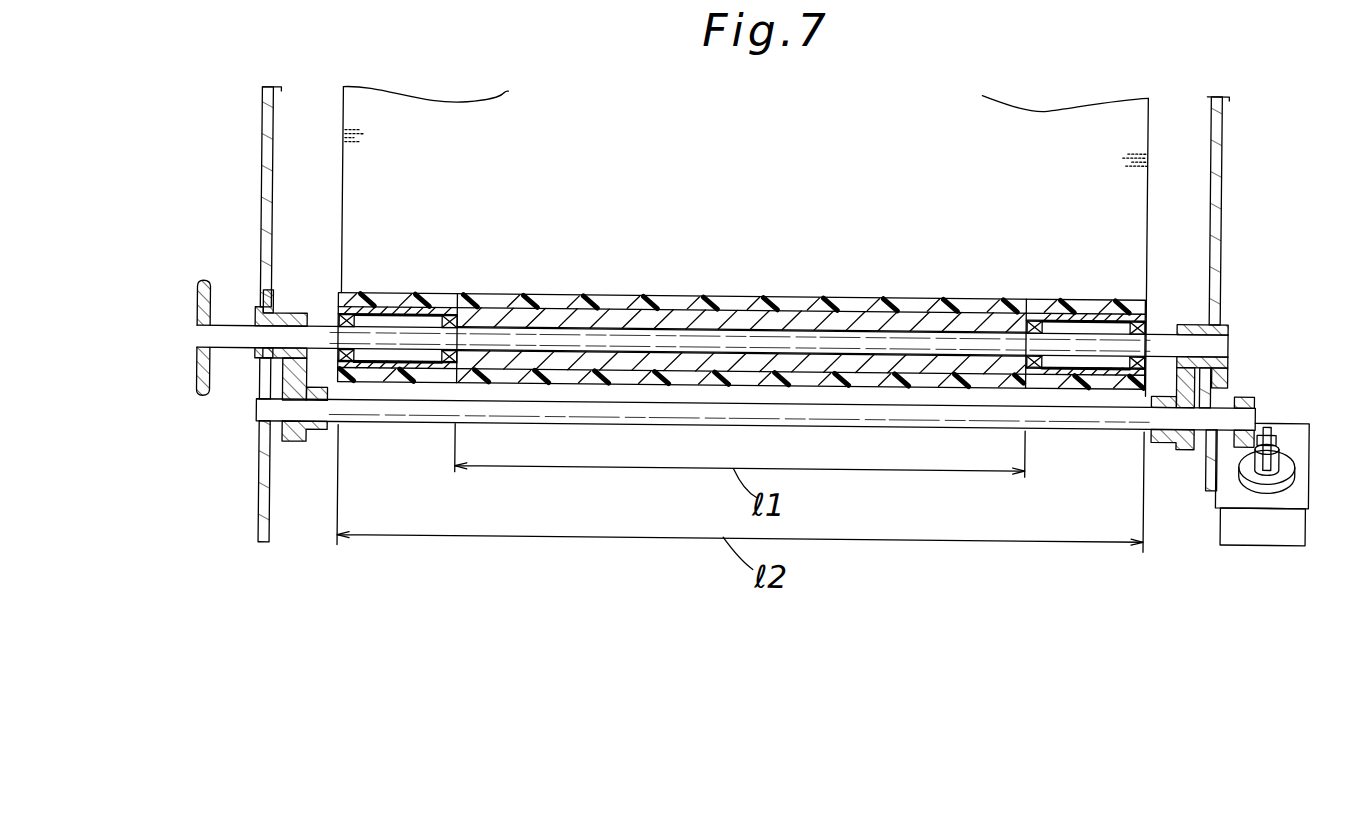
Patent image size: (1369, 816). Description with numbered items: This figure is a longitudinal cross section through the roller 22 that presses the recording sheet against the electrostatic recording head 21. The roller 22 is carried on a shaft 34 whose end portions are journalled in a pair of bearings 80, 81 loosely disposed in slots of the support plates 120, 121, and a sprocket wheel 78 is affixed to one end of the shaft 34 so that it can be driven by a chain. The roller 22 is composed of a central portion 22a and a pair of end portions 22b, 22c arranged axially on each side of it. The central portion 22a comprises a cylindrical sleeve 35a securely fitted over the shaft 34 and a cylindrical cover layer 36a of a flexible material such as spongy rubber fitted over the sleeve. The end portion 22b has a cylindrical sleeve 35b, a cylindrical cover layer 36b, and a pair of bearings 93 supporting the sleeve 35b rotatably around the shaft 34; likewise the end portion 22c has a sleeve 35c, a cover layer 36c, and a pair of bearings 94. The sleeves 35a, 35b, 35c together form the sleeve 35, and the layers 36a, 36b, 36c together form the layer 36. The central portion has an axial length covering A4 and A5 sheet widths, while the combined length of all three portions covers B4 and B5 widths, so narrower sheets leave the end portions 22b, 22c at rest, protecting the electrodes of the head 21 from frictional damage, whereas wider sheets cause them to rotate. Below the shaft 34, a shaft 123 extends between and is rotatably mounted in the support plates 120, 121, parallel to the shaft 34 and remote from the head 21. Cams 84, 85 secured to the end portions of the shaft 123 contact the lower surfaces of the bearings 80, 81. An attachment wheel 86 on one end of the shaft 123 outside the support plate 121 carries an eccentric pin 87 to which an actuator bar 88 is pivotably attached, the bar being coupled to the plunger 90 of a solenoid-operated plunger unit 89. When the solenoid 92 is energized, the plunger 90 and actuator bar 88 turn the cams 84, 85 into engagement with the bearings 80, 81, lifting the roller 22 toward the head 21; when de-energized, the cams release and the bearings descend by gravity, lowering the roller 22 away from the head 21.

The electrostatic recording head 21 is at (1133, 144).
The roller 22 is at (742, 291).
The central portion 22a is at (742, 292).
The end portion 22b is at (431, 290).
The end portion 22c is at (1047, 293).
The shaft 34 is at (322, 331).
The sleeve 35 is at (637, 318).
The cylindrical sleeve 35a is at (752, 316).
The cylindrical sleeve 35b is at (380, 314).
The cylindrical sleeve 35c is at (1050, 314).
The cover layer 36 is at (708, 303).
The cylindrical cover layer 36a is at (738, 246).
The cylindrical cover layer 36b is at (413, 304).
The cylindrical cover layer 36c is at (1094, 318).
The sprocket wheel 78 is at (208, 306).
The bearing 80 is at (258, 356).
The bearing 81 is at (1230, 360).
The cam 84 is at (298, 367).
The cam 85 is at (1187, 373).
The attachment wheel 86 is at (1247, 438).
The eccentric pin 87 is at (1277, 428).
The actuator bar 88 is at (1270, 435).
The solenoid-operated plunger unit 89 is at (1284, 512).
The plunger 90 is at (1263, 462).
The solenoid 92 is at (1283, 530).
The bearings 93 is at (458, 320).
The bearings 94 is at (1026, 320).
The support plate 120 is at (260, 481).
The support plate 121 is at (1207, 445).
The shaft 123 is at (1040, 412).